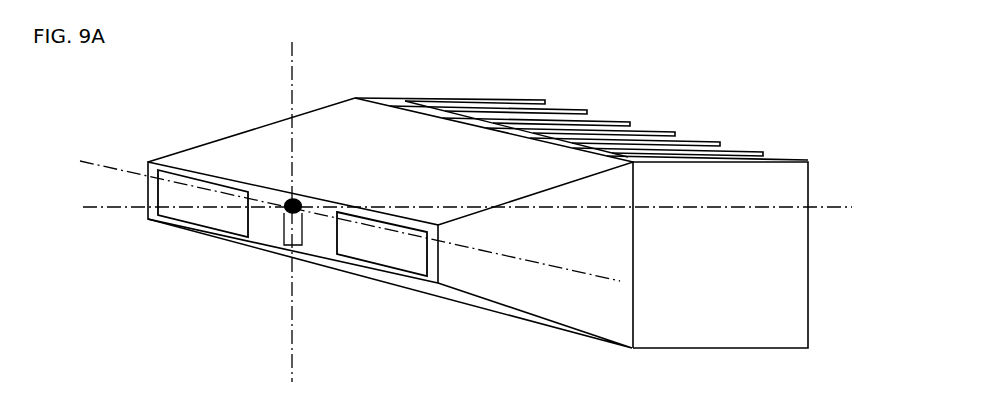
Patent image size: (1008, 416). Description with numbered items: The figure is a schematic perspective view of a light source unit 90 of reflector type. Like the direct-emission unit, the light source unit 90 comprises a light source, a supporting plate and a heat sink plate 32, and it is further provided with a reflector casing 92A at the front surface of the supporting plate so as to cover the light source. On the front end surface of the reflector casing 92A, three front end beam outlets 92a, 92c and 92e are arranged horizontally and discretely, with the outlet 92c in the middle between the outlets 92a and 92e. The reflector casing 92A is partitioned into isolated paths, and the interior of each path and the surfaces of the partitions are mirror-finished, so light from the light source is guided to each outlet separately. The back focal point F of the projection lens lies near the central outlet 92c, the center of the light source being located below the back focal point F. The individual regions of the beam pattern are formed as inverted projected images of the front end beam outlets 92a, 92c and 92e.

The light source unit 90 is at (443, 84).
The reflector casing 92A is at (237, 152).
The front end beam outlet 92e is at (184, 197).
The front end beam outlet 92a is at (390, 242).
The front end beam outlet 92c is at (287, 245).
The back focal point F is at (298, 196).
The heat sink plate 32 is at (812, 168).